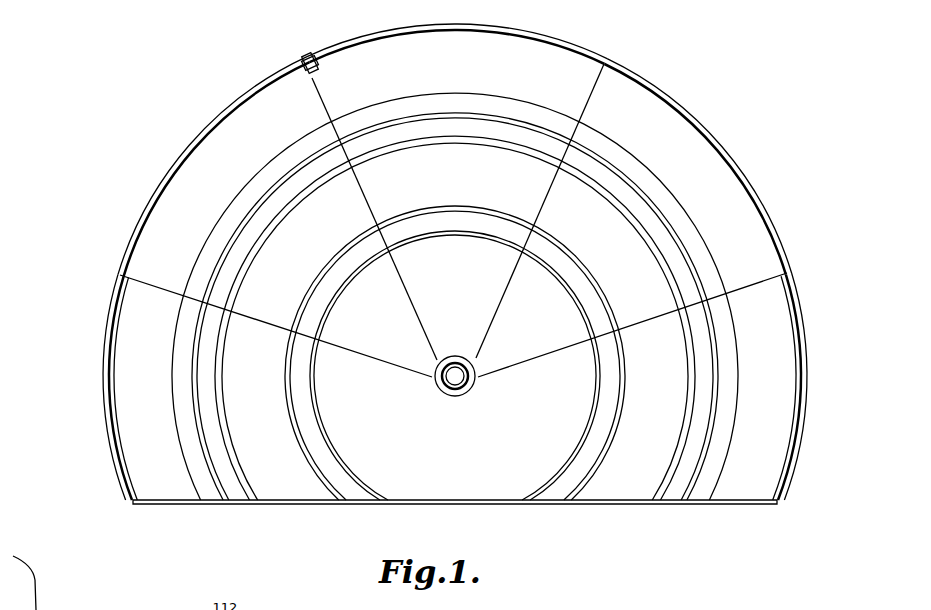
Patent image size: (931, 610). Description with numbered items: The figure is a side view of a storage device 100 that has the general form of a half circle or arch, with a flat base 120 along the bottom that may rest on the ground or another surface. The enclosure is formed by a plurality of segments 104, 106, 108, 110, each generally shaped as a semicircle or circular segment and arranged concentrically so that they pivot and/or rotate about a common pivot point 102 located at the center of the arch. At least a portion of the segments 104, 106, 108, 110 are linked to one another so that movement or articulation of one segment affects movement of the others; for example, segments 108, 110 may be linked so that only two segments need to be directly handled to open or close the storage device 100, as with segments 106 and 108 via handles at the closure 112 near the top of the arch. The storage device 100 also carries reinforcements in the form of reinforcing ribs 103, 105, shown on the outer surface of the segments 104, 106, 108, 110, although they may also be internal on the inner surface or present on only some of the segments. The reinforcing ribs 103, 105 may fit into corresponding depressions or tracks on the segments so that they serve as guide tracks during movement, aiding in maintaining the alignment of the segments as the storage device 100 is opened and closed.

The storage device 100 is at (148, 138).
The common pivot point 102 is at (465, 388).
The reinforcing rib 103 is at (693, 450).
The segment 104 is at (133, 421).
The reinforcing rib 105 is at (590, 457).
The segment 106 is at (165, 236).
The segment 108 is at (568, 72).
The segment 110 is at (700, 168).
The closure 112 is at (300, 57).
The base 120 is at (275, 506).